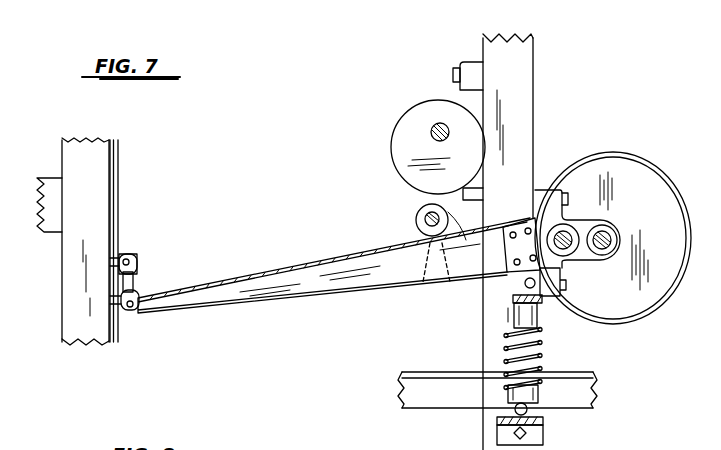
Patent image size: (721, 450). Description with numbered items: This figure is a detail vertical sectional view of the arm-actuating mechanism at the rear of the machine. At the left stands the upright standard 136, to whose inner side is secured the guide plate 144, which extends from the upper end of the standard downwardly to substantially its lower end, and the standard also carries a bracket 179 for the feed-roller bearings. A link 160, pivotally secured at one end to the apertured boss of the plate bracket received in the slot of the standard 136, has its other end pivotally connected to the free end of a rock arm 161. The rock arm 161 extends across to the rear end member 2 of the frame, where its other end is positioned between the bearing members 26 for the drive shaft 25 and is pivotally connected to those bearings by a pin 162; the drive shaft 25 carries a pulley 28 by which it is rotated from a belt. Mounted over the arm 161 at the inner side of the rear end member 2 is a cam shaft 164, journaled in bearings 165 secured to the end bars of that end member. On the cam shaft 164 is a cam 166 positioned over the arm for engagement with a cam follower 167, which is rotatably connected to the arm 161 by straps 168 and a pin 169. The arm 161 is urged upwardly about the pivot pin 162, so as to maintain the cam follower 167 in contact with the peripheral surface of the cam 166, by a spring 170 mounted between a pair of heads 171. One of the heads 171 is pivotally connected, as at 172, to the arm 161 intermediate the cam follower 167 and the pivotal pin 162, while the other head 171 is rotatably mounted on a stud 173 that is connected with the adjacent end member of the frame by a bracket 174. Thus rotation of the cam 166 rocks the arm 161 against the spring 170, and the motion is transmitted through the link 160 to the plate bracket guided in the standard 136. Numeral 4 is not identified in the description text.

The rear end member 2 is at (525, 90).
The base plate 4 is at (430, 400).
The drive shaft 25 is at (610, 238).
The bearings 26 is at (553, 272).
The pulley 28 is at (625, 170).
The standard 136 is at (73, 288).
The guide plate 144 is at (112, 220).
The link 160 is at (133, 278).
The rock arm 161 is at (177, 298).
The pin 162 is at (563, 237).
The cam shaft 164 is at (433, 126).
The bearings 165 is at (470, 90).
The cam 166 is at (397, 146).
The cam follower 167 is at (416, 222).
The straps 168 is at (412, 278).
The pin 169 is at (498, 245).
The spring 170 is at (552, 344).
The heads 171 is at (515, 322).
The pivotal connection 172 is at (513, 297).
The stud 173 is at (545, 423).
The bracket 174 is at (535, 437).
The bracket 179 is at (42, 222).